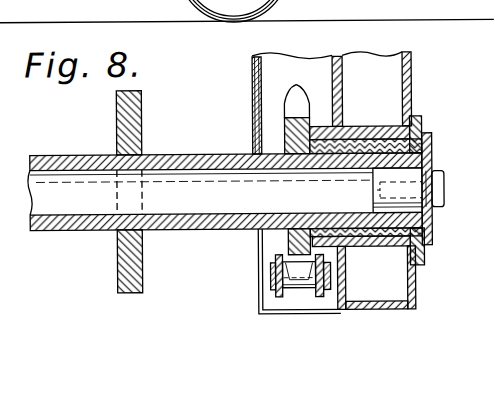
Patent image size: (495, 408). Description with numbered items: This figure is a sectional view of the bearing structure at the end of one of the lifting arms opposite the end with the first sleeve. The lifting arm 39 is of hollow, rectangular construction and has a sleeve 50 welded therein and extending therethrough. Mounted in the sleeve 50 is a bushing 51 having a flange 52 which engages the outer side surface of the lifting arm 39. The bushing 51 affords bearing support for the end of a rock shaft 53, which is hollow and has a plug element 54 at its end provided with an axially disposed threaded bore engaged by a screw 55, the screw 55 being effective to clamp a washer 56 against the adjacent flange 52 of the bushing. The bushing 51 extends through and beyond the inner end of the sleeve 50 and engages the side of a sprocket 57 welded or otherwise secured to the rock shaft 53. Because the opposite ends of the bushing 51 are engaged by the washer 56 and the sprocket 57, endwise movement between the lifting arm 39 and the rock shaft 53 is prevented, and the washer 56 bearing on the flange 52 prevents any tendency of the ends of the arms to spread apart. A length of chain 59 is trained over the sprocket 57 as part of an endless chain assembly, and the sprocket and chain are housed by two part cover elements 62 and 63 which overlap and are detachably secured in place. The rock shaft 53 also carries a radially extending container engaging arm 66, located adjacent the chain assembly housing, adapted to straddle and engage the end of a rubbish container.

The lifting arm 39 is at (412, 74).
The sleeve 50 is at (363, 127).
The bushing 51 is at (329, 228).
The flange 52 is at (423, 118).
The rock shaft 53 is at (63, 226).
The plug element 54 is at (428, 210).
The screw 55 is at (445, 191).
The washer 56 is at (433, 152).
The sprocket 57 is at (295, 93).
The length of chain 59 is at (275, 291).
The cover element 62 is at (262, 66).
The cover element 63 is at (253, 97).
The container engaging arm 66 is at (117, 277).